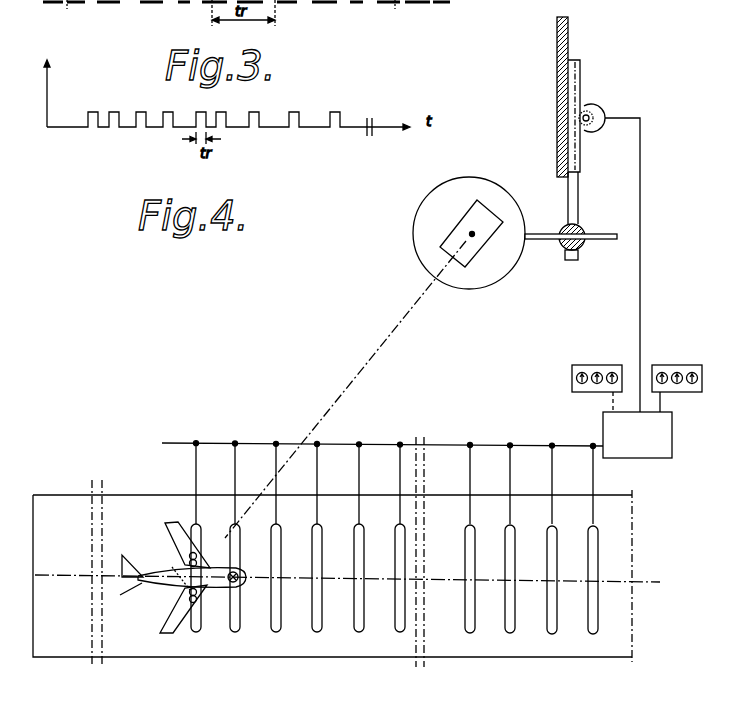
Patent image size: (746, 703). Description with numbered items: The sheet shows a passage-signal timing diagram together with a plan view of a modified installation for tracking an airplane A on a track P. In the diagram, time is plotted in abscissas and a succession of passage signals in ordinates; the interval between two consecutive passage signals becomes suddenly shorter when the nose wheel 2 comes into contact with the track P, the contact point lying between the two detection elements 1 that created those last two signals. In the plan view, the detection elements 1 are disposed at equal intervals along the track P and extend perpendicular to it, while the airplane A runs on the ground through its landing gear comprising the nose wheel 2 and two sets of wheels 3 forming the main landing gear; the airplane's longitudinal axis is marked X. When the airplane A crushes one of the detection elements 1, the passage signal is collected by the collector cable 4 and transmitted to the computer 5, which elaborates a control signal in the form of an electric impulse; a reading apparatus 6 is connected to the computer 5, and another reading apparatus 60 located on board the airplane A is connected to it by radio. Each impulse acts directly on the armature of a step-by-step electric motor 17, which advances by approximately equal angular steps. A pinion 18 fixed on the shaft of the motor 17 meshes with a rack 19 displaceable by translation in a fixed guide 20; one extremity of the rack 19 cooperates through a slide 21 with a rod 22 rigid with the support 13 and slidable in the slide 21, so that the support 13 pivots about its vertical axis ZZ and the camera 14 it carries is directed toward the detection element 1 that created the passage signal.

The detection elements 1 is at (207, 612).
The nose wheel 2 is at (231, 572).
The sets of wheels 3 is at (188, 558).
The collector cable 4 is at (239, 443).
The computer 5 is at (641, 441).
The indicator lamps 6 is at (677, 365).
The reading apparatus 60 is at (592, 365).
The support 13 is at (432, 196).
The camera 14 is at (467, 217).
The electric motor 17 is at (601, 134).
The pinion 18 is at (595, 108).
The rack 19 is at (578, 71).
The fixed guide 20 is at (541, 97).
The slide 21 is at (582, 247).
The rod 22 is at (545, 240).
The airplane A is at (165, 583).
The track P is at (62, 637).
The axis X is at (347, 573).
The vertical axis ZZ is at (474, 236).